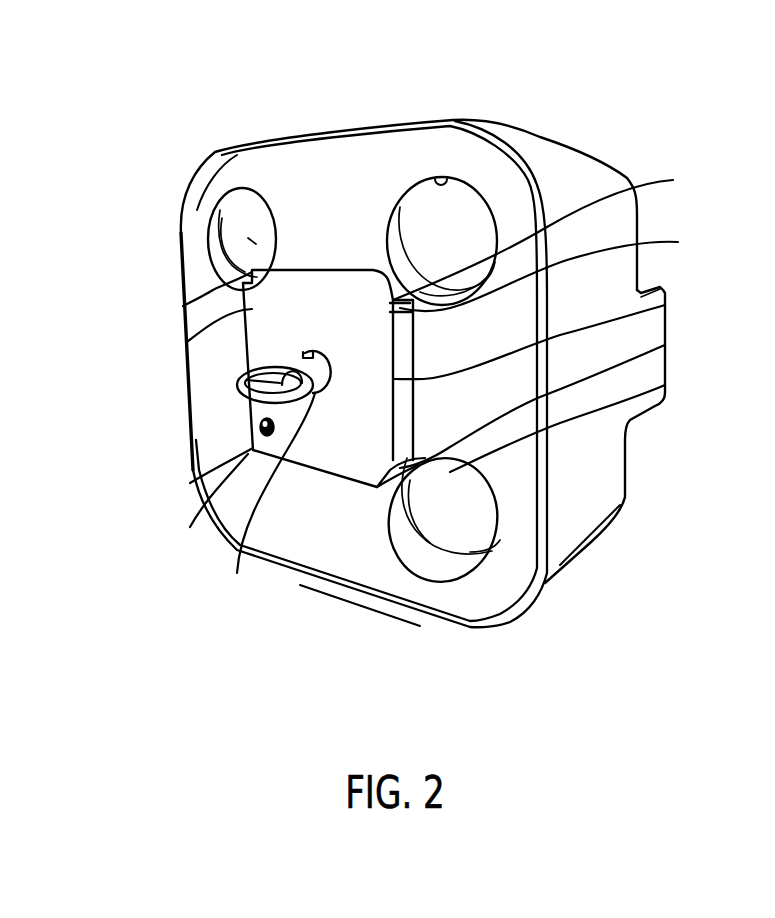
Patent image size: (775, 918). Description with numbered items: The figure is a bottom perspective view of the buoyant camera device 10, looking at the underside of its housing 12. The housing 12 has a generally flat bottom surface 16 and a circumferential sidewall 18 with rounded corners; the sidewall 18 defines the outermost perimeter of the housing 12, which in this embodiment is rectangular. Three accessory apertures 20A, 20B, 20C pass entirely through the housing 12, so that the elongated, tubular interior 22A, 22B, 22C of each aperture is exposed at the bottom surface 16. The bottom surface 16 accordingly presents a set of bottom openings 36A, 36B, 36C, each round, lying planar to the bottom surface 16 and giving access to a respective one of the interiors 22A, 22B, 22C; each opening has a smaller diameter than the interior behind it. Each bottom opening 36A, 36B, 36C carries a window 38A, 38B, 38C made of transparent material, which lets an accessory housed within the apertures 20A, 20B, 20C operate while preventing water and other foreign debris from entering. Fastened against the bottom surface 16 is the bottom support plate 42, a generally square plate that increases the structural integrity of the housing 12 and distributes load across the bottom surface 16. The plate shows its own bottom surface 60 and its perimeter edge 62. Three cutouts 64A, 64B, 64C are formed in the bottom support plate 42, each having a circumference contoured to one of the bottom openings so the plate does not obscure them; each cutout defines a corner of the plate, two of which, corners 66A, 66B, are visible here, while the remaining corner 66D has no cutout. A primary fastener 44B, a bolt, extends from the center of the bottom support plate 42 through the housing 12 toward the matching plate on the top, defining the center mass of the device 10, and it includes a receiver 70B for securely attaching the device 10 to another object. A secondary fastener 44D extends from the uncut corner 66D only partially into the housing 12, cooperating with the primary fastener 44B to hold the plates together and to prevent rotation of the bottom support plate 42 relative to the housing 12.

The buoyant camera device 10 is at (690, 145).
The housing 12 is at (600, 457).
The bottom surface 16 is at (367, 565).
The circumferential sidewall 18 is at (580, 545).
The accessory aperture 20A is at (230, 210).
The accessory aperture 20B is at (459, 228).
The accessory aperture 20C is at (457, 565).
The elongated interior 22A is at (240, 258).
The elongated interior 22B is at (438, 178).
The elongated interior 22C is at (412, 538).
The bottom opening 36A is at (249, 225).
The bottom opening 36B is at (450, 227).
The bottom opening 36C is at (470, 532).
The window 38A is at (253, 243).
The window 38B is at (465, 268).
The window 38C is at (460, 508).
The bottom support plate 42 is at (277, 328).
The primary fastener 44B is at (237, 573).
The secondary fastener 44D is at (190, 483).
The bottom surface of bottom support plate 60 is at (240, 377).
The perimeter edge 62 is at (665, 305).
The cutout 64A is at (183, 306).
The cutout 64B is at (673, 180).
The cutout 64C is at (665, 385).
The corner of bottom support plate 66A is at (187, 342).
The corner of bottom support plate 66B is at (678, 242).
The corner of bottom support plate 66D is at (665, 345).
The receiver 70B is at (260, 427).